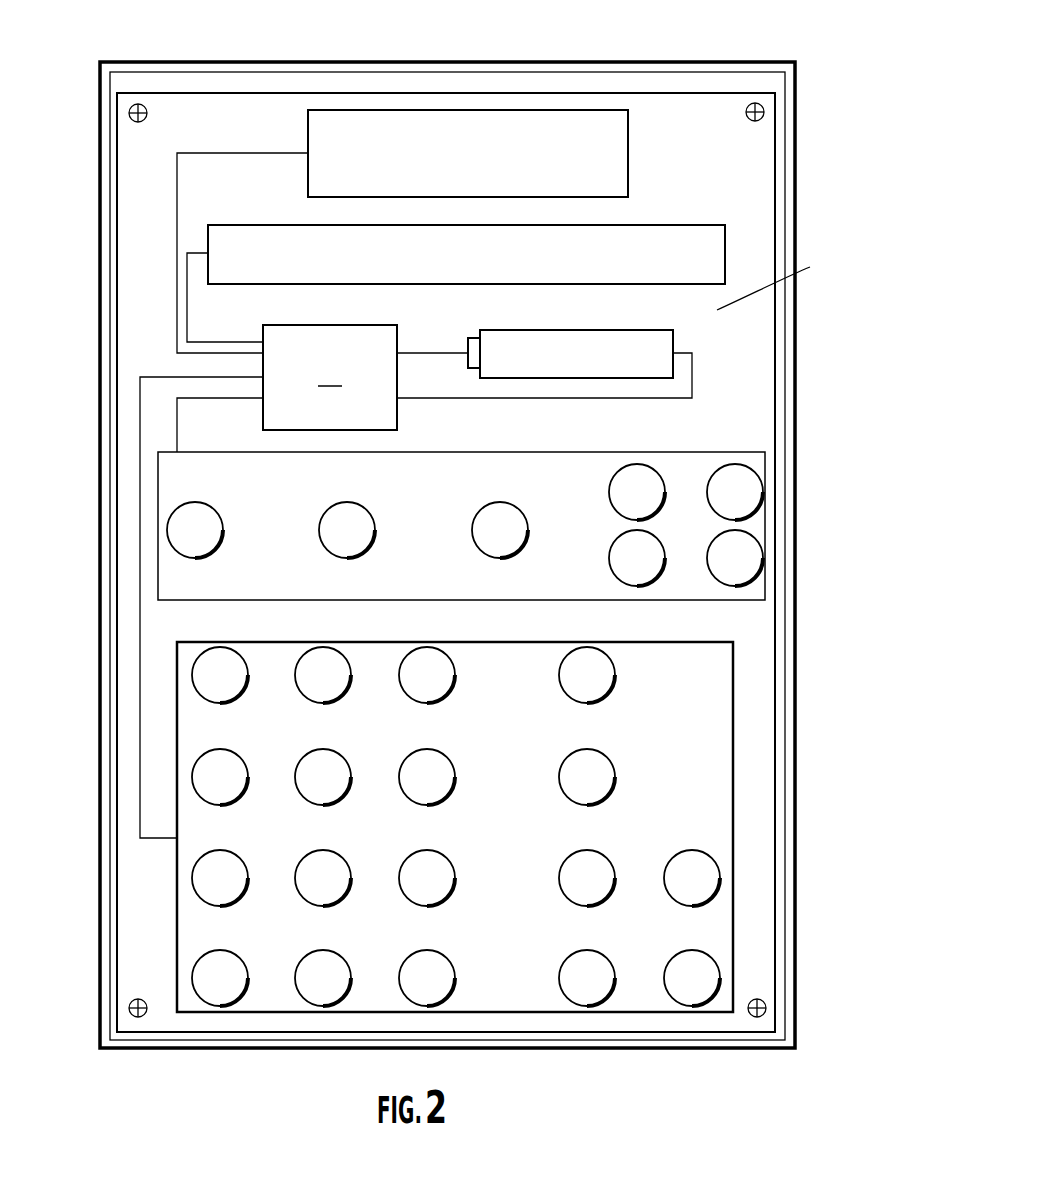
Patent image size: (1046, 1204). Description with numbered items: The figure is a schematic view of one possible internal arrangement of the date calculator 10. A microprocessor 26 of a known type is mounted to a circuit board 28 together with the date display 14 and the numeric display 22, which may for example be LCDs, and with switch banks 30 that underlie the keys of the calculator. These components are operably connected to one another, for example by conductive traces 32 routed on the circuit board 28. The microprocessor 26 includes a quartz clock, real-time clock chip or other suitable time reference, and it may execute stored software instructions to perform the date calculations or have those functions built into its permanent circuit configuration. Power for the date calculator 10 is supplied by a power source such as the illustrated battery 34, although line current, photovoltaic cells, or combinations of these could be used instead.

The date calculator 10 is at (84, 149).
The date display 14 is at (608, 150).
The numeric display 22 is at (713, 243).
The microprocessor 26 is at (477, 377).
The circuit board 28 is at (781, 280).
The switch banks 30 is at (720, 780).
The conductive traces 32 is at (177, 235).
The battery 34 is at (657, 367).